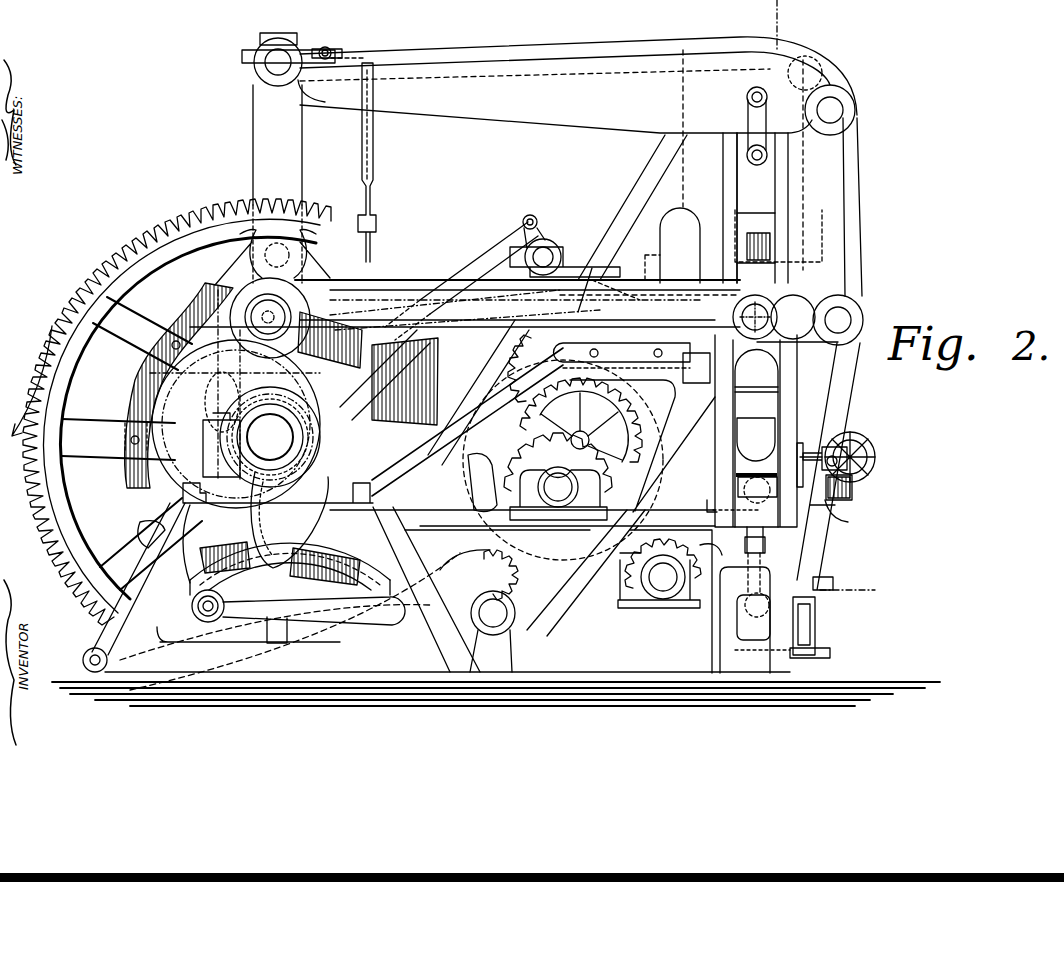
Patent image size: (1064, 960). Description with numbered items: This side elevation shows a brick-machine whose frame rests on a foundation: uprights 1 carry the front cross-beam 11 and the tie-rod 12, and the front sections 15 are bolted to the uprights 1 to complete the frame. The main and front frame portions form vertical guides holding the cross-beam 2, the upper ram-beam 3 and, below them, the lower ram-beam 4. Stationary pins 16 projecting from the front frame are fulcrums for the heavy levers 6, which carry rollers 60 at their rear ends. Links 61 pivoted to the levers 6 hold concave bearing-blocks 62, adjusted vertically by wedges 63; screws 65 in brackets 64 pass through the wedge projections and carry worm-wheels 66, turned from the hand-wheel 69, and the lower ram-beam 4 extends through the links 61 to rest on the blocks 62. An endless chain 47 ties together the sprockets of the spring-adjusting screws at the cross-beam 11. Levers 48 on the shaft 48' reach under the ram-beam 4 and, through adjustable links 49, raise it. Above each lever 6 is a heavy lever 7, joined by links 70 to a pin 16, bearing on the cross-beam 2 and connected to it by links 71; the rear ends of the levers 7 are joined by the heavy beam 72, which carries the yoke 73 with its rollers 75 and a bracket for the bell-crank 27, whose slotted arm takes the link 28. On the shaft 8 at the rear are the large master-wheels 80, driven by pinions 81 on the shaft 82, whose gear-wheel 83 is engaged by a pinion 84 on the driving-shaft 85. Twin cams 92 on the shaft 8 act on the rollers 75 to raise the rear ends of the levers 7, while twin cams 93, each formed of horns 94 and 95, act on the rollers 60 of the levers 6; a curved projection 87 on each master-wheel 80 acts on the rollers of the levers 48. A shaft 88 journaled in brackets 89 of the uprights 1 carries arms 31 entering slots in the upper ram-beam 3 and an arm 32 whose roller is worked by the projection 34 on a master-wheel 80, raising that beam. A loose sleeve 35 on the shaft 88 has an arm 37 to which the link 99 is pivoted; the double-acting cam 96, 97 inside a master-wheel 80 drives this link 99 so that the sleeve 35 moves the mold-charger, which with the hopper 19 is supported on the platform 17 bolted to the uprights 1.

The uprights 1 is at (496, 419).
The cross-beam 2 is at (743, 166).
The upper ram-beam 3 is at (762, 236).
The lower ram-beam 4 is at (756, 439).
The heavy levers 6 is at (481, 293).
The heavy lever 7 is at (850, 80).
The shaft 8 is at (235, 388).
The front cross-beam 11 is at (815, 622).
The tie-rod 12 is at (83, 660).
The sections 15 is at (792, 376).
The stationary pins 16 is at (798, 320).
The platform 17 is at (630, 362).
The hopper 19 is at (660, 262).
The bell-crank 27 is at (332, 53).
The link 28 is at (373, 143).
The arms 31 is at (598, 254).
The arm 32 is at (434, 392).
The projection 34 is at (340, 576).
The loose sleeve 35 is at (546, 248).
The arm 37 is at (529, 222).
The endless chain 47 is at (832, 653).
The levers 48 is at (314, 620).
The shaft 48' is at (479, 592).
The adjustable links 49 is at (745, 538).
The rollers 60 is at (290, 345).
The links 61 is at (756, 487).
The bearing-blocks 62 is at (740, 478).
The wedges 63 is at (826, 522).
The brackets 64 is at (858, 452).
The screws 65 is at (840, 520).
The worm-wheels 66 is at (842, 506).
The hand-wheel 69 is at (852, 485).
The links 70 is at (852, 212).
The links 71 is at (746, 118).
The heavy beam 72 is at (288, 57).
The yoke 73 is at (277, 184).
The rollers 75 is at (250, 250).
The master-wheels 80 is at (80, 355).
The pinions 81 is at (570, 458).
The shaft 82 is at (558, 493).
The gear-wheel 83 is at (632, 426).
The pinion 84 is at (703, 540).
The driving-shaft 85 is at (659, 573).
The curved projection 87 is at (195, 604).
The shaft 88 is at (570, 258).
The brackets 89 is at (588, 282).
The twin cams 92 is at (208, 293).
The twin cams 93 is at (258, 486).
The horn 94 is at (289, 520).
The horn 95 is at (236, 424).
The cam part 96 is at (137, 497).
The cam part 97 is at (418, 381).
The link 99 is at (461, 281).